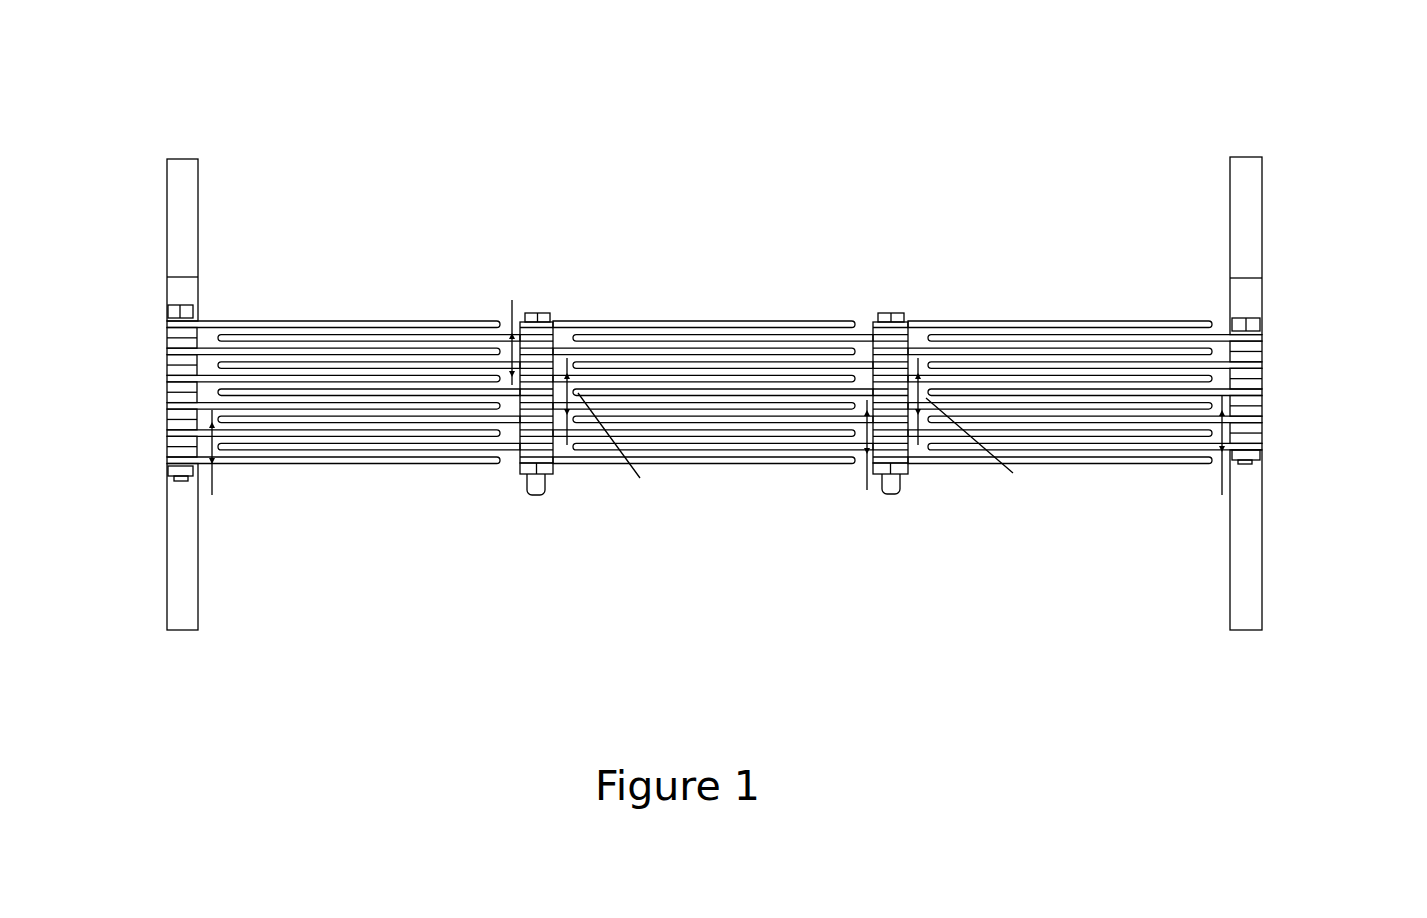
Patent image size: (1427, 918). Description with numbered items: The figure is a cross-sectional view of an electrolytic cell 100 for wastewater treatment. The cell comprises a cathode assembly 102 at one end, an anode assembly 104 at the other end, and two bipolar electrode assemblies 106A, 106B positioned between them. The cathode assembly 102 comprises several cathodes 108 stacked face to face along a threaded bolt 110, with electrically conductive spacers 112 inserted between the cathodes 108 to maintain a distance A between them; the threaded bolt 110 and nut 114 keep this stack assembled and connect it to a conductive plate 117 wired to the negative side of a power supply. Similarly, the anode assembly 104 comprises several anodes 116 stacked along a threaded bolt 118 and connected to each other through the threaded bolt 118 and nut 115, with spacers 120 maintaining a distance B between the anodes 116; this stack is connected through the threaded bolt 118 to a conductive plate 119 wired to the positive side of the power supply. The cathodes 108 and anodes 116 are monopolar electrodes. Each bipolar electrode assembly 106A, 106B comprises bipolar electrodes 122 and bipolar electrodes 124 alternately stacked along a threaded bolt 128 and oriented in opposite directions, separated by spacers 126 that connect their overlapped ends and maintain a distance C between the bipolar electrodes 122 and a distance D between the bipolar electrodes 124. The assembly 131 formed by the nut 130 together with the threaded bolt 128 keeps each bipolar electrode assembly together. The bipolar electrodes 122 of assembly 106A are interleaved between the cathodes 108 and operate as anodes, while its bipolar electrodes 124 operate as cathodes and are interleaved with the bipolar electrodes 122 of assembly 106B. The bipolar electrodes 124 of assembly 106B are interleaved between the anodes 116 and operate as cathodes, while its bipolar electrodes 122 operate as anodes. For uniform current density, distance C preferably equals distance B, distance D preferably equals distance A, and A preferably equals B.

The electrolytic cell 100 is at (1072, 140).
The cathode assembly 102 is at (160, 363).
The anode assembly 104 is at (1265, 346).
The bipolar electrode assembly 106A is at (563, 317).
The bipolar electrode assembly 106B is at (915, 317).
The cathodes 108 is at (368, 380).
The threaded bolt 110 is at (195, 311).
The spacers 112 is at (165, 403).
The nut 114 is at (165, 468).
The nut 115 is at (1265, 454).
The anodes 116 is at (1140, 380).
The conductive plate 117 is at (190, 196).
The threaded bolt 118 is at (1250, 327).
The conductive plate 119 is at (1243, 232).
The spacers 120 is at (1263, 390).
The bipolar electrodes 122 is at (430, 393).
The bipolar electrodes 124 is at (650, 380).
The spacers 126 is at (552, 440).
The threaded bolt 128 is at (537, 312).
The nut 130 is at (518, 468).
The assembly 131 is at (535, 500).